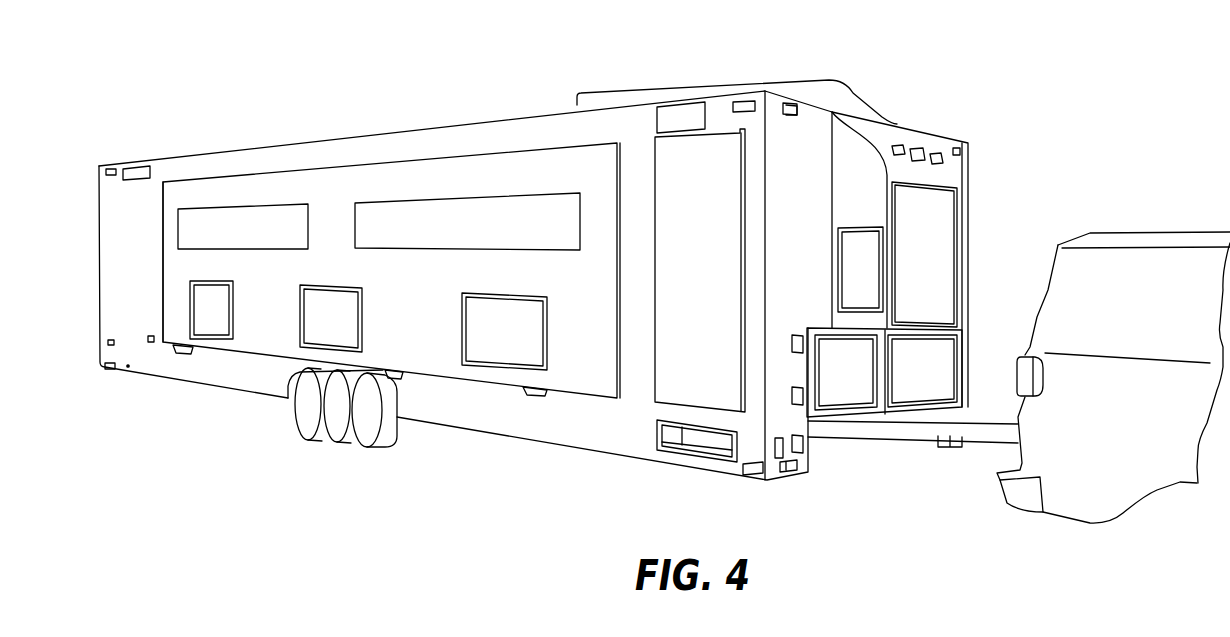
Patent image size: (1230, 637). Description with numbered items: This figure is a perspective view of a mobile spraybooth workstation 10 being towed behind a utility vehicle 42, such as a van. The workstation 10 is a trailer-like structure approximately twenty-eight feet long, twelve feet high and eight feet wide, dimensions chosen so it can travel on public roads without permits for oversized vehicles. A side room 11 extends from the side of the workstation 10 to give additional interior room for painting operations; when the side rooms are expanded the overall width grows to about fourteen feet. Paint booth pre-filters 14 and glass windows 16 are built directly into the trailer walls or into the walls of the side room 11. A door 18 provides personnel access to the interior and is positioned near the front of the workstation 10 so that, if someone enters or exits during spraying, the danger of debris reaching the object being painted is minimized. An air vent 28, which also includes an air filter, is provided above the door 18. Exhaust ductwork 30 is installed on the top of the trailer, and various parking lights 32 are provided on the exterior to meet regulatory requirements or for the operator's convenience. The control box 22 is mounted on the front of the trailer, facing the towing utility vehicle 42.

The mobile spraybooth workstation 10 is at (410, 73).
The side room 11 is at (503, 167).
The paint booth pre-filters 14 is at (478, 343).
The glass windows 16 is at (367, 215).
The door 18 is at (733, 152).
The control box 22 is at (952, 182).
The air vent 28 is at (677, 118).
The exhaust ductwork 30 is at (617, 93).
The parking lights 32 is at (110, 168).
The utility vehicle 42 is at (1143, 237).